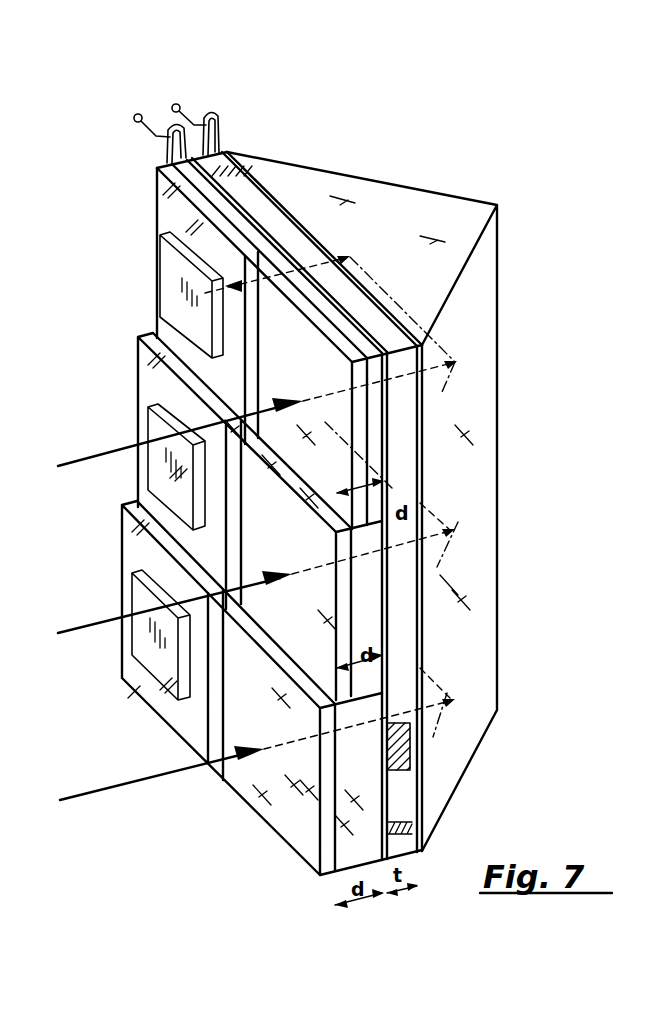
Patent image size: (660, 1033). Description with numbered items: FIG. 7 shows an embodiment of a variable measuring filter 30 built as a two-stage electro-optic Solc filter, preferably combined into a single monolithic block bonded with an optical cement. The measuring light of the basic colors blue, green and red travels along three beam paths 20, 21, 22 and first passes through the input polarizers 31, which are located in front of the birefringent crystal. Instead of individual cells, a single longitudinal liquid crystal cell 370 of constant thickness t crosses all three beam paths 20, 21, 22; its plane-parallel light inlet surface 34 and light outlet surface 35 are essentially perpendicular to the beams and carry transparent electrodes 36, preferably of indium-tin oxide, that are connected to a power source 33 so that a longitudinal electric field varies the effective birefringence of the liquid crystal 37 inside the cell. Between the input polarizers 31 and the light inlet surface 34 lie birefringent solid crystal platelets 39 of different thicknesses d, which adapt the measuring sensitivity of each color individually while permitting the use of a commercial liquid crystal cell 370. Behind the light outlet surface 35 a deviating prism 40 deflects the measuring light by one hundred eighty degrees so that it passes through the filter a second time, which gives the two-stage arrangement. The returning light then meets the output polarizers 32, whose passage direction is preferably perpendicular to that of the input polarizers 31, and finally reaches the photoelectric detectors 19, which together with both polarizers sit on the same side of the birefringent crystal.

The photoelectric detector 19 is at (160, 290).
The beam path of basic color B 20 is at (82, 462).
The beam path of basic color G 21 is at (77, 640).
The beam path of basic color R 22 is at (108, 788).
The variable measuring filter 30 is at (392, 142).
The input polarizer 31 is at (310, 482).
The output polarizer 32 is at (160, 215).
The power source 33 is at (150, 112).
The light inlet surface 34 is at (382, 812).
The light outlet surface 35 is at (420, 682).
The transparent electrode 36 is at (300, 248).
The liquid crystal 37 is at (405, 746).
The birefringent solid crystal platelet 39 is at (400, 434).
The deviating prism 40 is at (498, 372).
The liquid crystal cell 370 is at (420, 802).